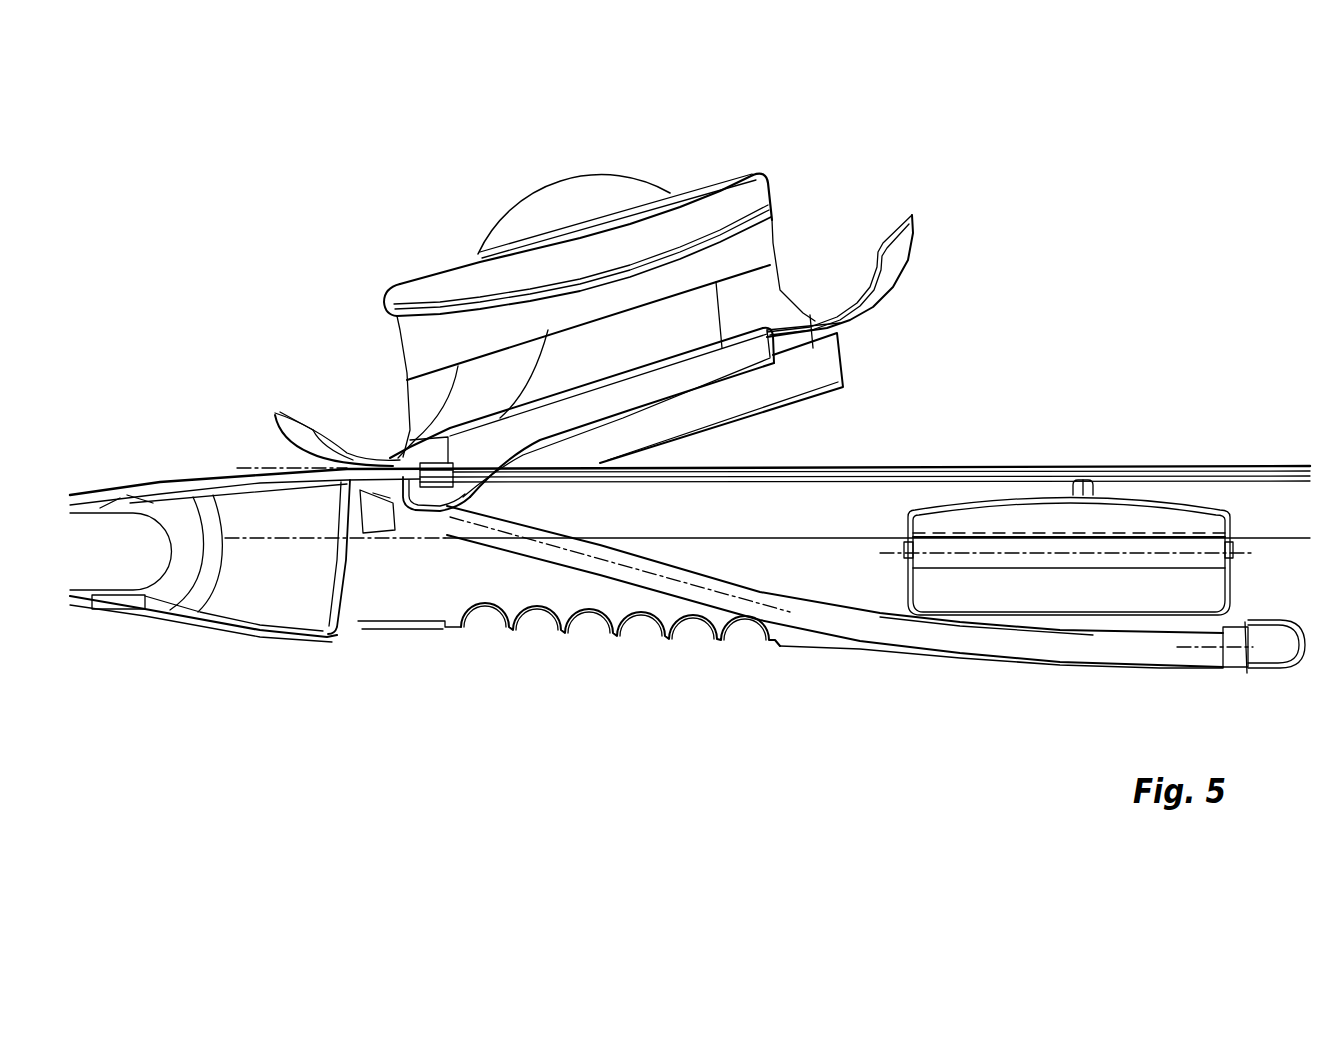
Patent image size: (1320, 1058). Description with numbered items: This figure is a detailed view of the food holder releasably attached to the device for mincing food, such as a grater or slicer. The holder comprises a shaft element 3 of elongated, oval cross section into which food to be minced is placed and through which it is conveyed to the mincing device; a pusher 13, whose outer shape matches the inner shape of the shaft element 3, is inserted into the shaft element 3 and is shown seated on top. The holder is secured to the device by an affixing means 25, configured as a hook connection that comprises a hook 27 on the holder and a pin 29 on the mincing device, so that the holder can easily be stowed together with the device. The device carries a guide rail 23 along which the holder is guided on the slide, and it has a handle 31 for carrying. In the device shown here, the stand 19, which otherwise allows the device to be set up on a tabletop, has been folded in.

The shaft element 3 is at (726, 246).
The pusher 13 is at (607, 228).
The stand 19 is at (838, 622).
The guide rail 23 is at (800, 512).
The affixing means 25 is at (370, 352).
The hook 27 is at (440, 493).
The pin 29 is at (410, 455).
The handle 31 is at (88, 562).